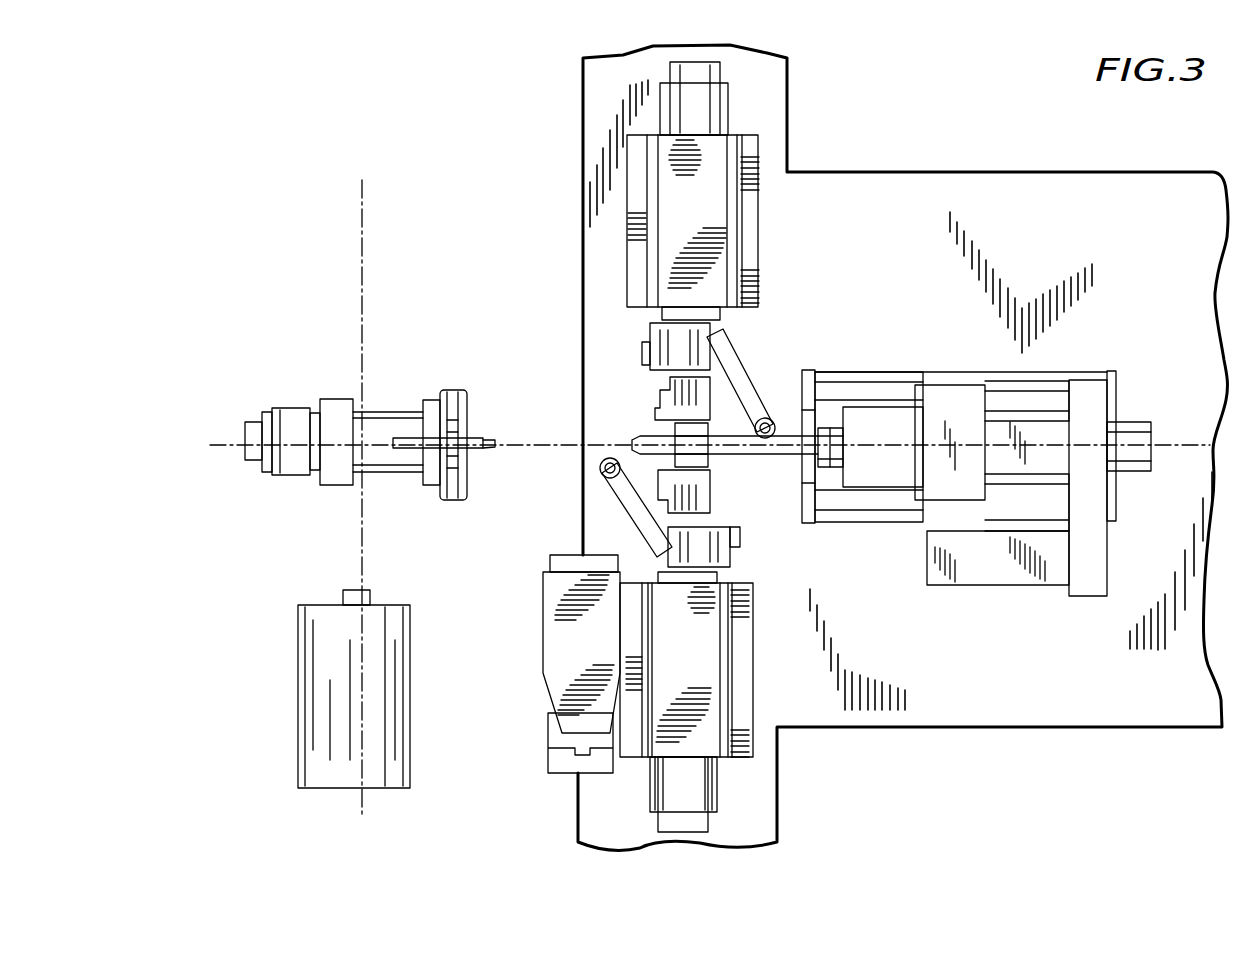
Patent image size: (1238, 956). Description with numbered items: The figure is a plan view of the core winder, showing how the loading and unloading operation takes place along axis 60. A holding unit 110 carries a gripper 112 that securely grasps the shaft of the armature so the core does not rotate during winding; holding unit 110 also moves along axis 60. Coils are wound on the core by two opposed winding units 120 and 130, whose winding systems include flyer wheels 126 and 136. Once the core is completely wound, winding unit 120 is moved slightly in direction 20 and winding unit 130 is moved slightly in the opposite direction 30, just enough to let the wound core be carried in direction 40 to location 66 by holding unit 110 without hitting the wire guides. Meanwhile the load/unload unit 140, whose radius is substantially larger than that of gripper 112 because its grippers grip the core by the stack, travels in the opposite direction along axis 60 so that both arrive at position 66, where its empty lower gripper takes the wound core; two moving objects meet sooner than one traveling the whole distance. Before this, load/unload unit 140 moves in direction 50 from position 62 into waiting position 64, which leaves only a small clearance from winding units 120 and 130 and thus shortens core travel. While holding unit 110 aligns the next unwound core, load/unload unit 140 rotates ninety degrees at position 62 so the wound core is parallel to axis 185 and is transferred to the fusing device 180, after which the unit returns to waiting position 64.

The direction 20 is at (605, 228).
The direction 30 is at (770, 652).
The direction 40 is at (628, 410).
The direction 50 is at (778, 476).
The axis 60 is at (233, 440).
The position 62 is at (455, 504).
The position 64 is at (557, 448).
The position 66 is at (600, 445).
The holding unit 110 is at (945, 358).
The gripper 112 is at (796, 462).
The winding unit 120 is at (763, 272).
The flyer wheel 126 is at (780, 428).
The winding unit 130 is at (755, 690).
The flyer wheel 136 is at (610, 480).
The load/unload unit 140 is at (351, 380).
The fusing device 180 is at (412, 678).
The axis 185 is at (365, 282).